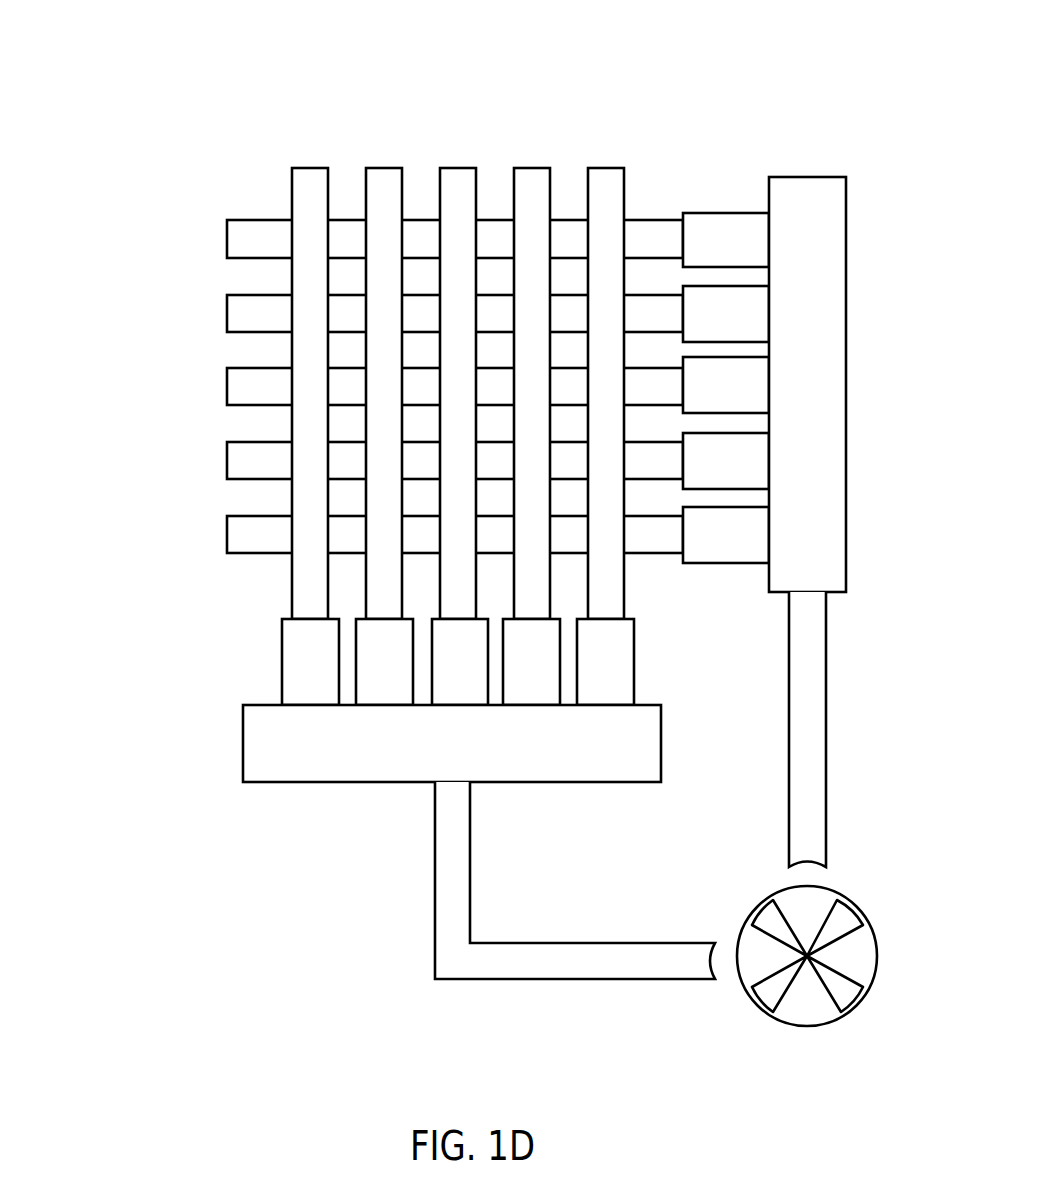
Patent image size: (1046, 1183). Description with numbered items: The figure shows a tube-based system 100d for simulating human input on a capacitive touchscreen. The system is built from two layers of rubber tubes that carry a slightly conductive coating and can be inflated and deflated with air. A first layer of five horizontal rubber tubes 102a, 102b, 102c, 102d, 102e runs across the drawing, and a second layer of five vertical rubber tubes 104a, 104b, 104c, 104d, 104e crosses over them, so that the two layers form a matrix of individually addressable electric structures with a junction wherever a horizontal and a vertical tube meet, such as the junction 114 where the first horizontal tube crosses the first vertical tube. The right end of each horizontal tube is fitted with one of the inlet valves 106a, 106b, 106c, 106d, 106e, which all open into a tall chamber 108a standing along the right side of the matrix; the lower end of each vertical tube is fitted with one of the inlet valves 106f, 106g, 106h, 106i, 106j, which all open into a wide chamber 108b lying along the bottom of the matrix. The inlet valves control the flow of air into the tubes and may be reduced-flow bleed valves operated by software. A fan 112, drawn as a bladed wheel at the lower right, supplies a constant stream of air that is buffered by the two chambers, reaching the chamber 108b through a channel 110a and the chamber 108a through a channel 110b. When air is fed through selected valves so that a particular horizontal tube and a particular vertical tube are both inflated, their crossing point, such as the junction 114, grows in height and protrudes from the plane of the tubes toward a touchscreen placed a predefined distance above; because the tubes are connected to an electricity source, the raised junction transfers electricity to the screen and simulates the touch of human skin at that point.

The system 100d is at (180, 54).
The rubber tube 102a is at (227, 240).
The rubber tube 102b is at (227, 314).
The rubber tube 102c is at (227, 387).
The rubber tube 102d is at (227, 461).
The rubber tube 102e is at (227, 535).
The rubber tube 104a is at (306, 168).
The rubber tube 104b is at (383, 168).
The rubber tube 104c is at (457, 168).
The rubber tube 104d is at (532, 168).
The rubber tube 104e is at (613, 168).
The inlet valve 106a is at (752, 252).
The inlet valve 106b is at (752, 326).
The inlet valve 106c is at (752, 397).
The inlet valve 106d is at (752, 472).
The inlet valve 106e is at (752, 546).
The inlet valve 106f is at (605, 662).
The inlet valve 106g is at (531, 662).
The inlet valve 106h is at (460, 662).
The inlet valve 106i is at (384, 662).
The inlet valve 106j is at (310, 662).
The chamber 108a is at (833, 397).
The chamber 108b is at (478, 754).
The channel 110a is at (435, 902).
The channel 110b is at (826, 685).
The fan 112 is at (825, 887).
The junction 114 is at (302, 228).